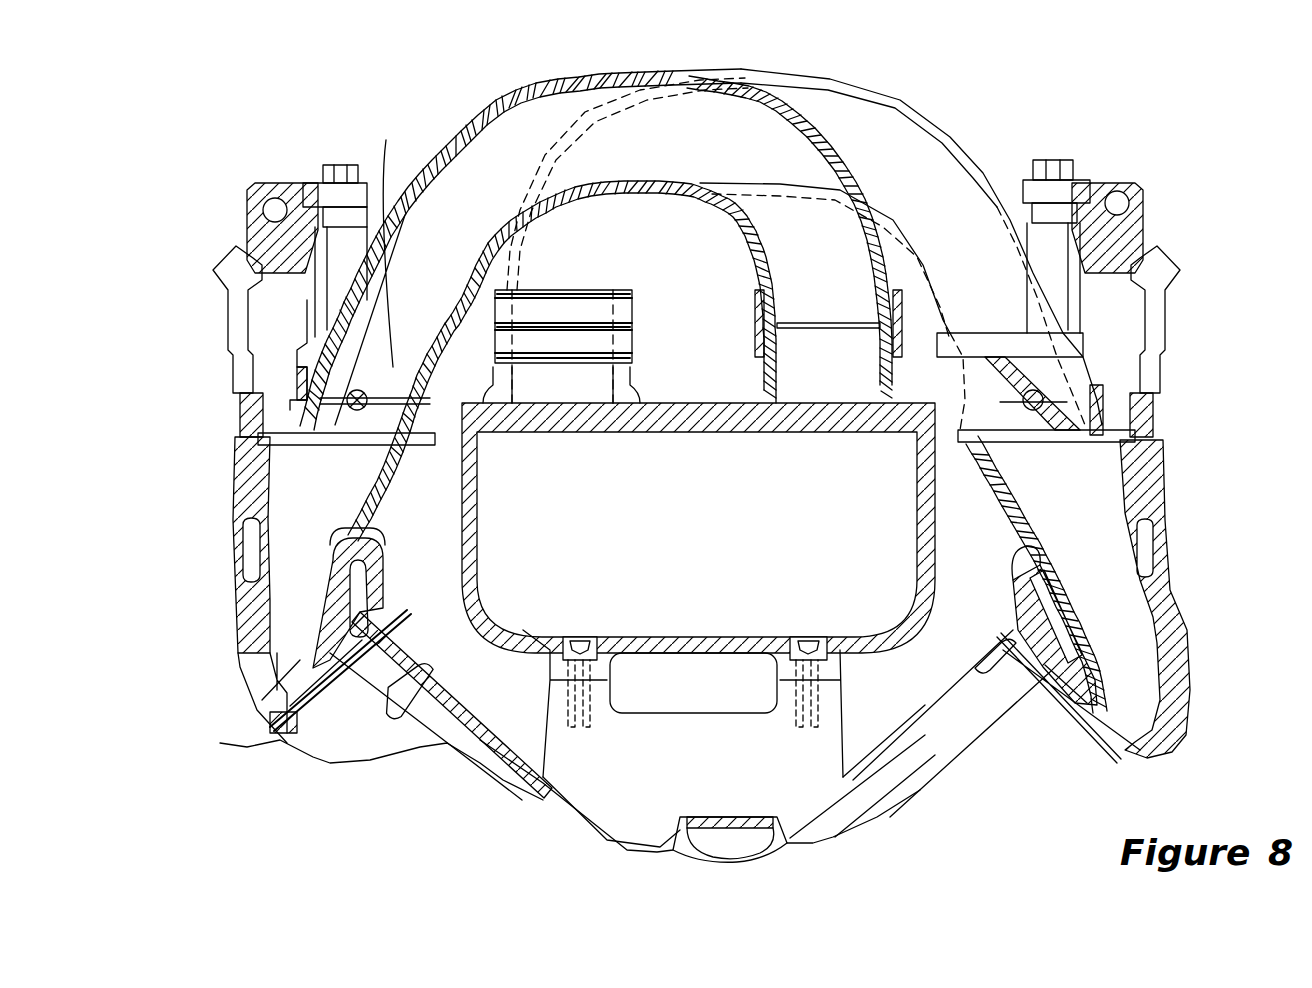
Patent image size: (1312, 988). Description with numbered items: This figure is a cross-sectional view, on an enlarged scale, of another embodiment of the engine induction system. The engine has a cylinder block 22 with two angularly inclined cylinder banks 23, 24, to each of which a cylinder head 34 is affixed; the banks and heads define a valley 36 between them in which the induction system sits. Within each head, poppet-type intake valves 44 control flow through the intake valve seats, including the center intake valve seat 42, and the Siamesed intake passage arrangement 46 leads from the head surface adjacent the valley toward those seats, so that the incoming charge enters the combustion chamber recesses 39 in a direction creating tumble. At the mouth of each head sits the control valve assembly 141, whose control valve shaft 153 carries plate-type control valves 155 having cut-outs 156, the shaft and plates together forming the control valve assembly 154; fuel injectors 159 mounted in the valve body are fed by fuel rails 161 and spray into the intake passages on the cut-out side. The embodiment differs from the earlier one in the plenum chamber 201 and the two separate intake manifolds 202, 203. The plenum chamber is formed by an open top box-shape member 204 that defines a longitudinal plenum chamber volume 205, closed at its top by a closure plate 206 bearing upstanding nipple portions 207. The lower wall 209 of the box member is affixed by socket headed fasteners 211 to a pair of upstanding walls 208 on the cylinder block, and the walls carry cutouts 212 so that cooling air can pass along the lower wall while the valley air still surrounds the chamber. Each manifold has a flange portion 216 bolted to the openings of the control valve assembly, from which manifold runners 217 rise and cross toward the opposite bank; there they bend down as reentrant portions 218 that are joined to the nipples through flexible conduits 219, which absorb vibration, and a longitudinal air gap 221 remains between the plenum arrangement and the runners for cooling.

The cylinder block 22 is at (673, 805).
The cylinder bank 23 is at (950, 675).
The cylinder bank 24 is at (467, 717).
The cylinder head 34 is at (392, 580).
The valley 36 is at (520, 770).
The combustion chamber recess 39 is at (270, 740).
The center intake valve seat 42 is at (330, 722).
The intake valve 44 is at (283, 653).
The intake passage arrangement 46 is at (333, 543).
The control valve assembly 141 is at (240, 410).
The control valve shaft 153 is at (334, 183).
The control valve assembly 154 is at (332, 97).
The plate-type control valve 155 is at (707, 269).
The cut-out 156 is at (330, 430).
The fuel injector 159 is at (213, 262).
The fuel rail 161 is at (256, 185).
The plenum chamber 201 is at (460, 605).
The intake manifold 202 is at (505, 83).
The intake manifold 203 is at (962, 103).
The box-shape member 204 is at (483, 507).
The plenum chamber volume 205 is at (660, 537).
The closure plate 206 is at (694, 400).
The nipple portion 207 is at (488, 383).
The upstanding wall 208 is at (845, 702).
The lower wall 209 is at (698, 660).
The fastener 211 is at (582, 637).
The cutout 212 is at (630, 702).
The flange portion 216 is at (457, 335).
The manifold runner 217 is at (535, 70).
The reentrant portion 218 is at (510, 250).
The flexible conduit 219 is at (495, 300).
The air gap 221 is at (663, 223).